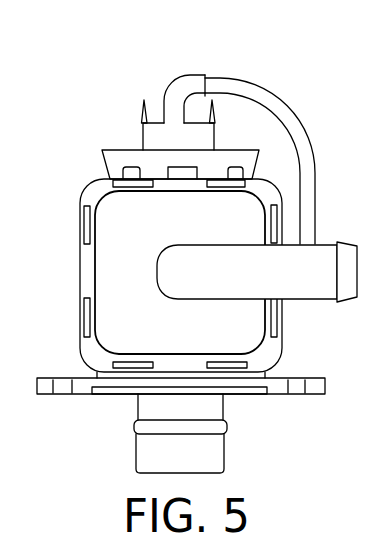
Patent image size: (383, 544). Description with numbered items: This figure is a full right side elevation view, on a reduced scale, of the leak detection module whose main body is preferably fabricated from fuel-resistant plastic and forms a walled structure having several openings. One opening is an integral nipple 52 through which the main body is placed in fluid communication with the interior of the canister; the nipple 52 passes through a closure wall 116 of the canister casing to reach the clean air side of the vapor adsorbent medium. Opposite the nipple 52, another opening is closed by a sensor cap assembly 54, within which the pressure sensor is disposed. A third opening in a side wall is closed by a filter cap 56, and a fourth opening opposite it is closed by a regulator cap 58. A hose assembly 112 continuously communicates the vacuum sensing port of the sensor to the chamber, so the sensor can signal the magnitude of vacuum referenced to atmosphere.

The integral nipple 52 is at (155, 458).
The sensor cap assembly 54 is at (238, 154).
The filter cap 56 is at (122, 293).
The regulator cap 58 is at (314, 298).
The hose assembly 112 is at (265, 88).
The closure wall 116 is at (58, 399).